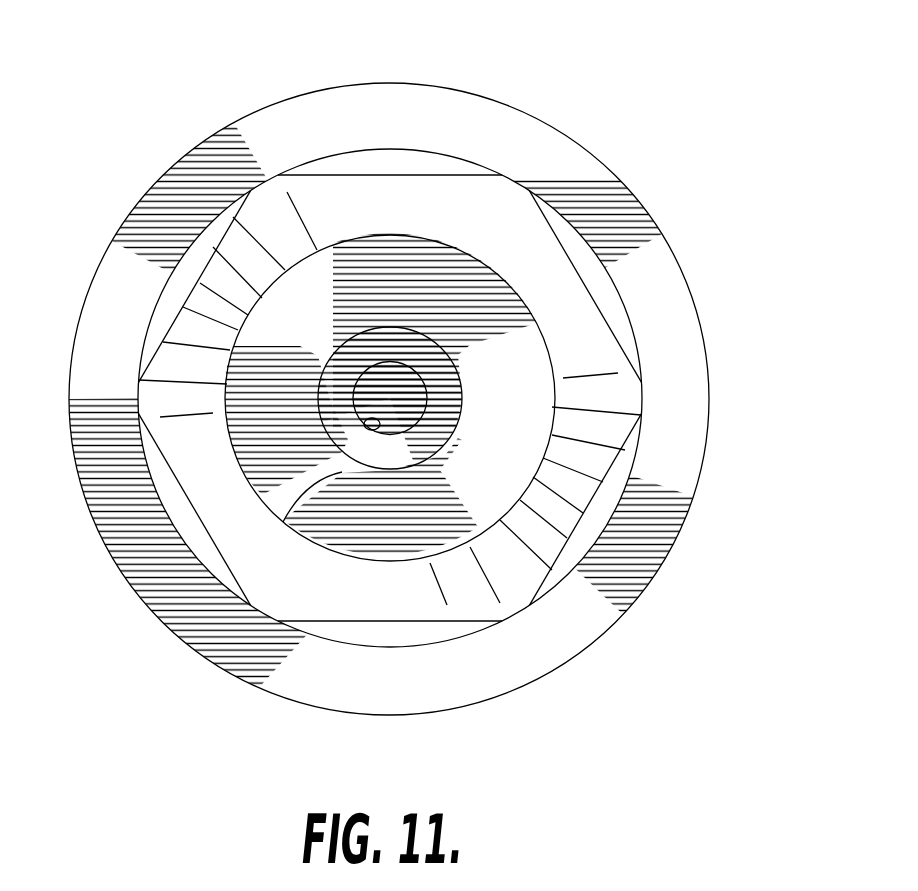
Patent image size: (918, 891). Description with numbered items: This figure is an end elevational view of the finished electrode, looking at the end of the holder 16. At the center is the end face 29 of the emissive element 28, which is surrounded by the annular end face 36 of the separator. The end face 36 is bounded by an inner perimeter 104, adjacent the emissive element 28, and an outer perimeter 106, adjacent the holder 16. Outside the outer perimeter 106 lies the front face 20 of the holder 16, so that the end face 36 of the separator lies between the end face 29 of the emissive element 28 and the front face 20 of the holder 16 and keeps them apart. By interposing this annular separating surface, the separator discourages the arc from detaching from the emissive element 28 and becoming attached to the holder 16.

The holder 16 is at (692, 257).
The front face 20 is at (273, 340).
The emissive element 28 is at (308, 412).
The end face 29 is at (378, 394).
The end face 36 is at (382, 347).
The inner perimeter 104 is at (392, 445).
The outer perimeter 106 is at (368, 428).